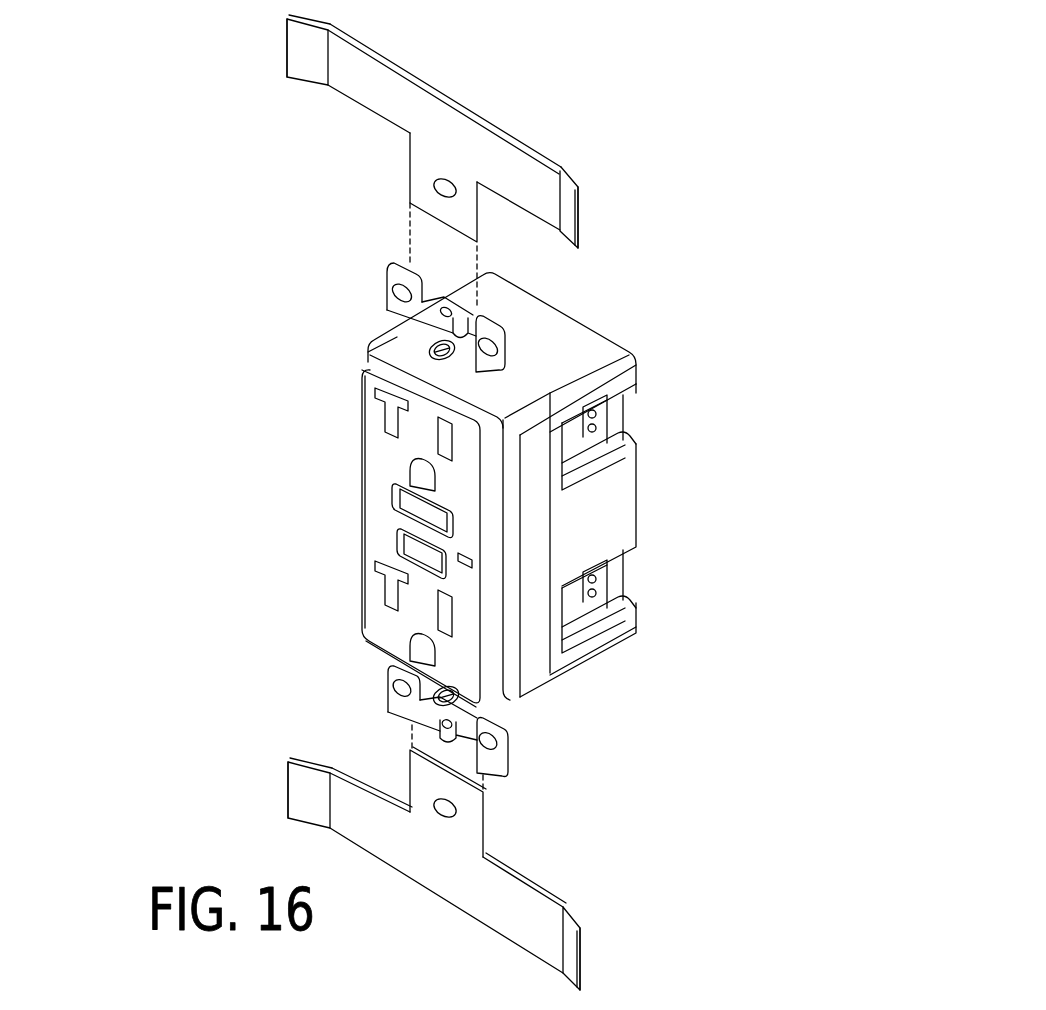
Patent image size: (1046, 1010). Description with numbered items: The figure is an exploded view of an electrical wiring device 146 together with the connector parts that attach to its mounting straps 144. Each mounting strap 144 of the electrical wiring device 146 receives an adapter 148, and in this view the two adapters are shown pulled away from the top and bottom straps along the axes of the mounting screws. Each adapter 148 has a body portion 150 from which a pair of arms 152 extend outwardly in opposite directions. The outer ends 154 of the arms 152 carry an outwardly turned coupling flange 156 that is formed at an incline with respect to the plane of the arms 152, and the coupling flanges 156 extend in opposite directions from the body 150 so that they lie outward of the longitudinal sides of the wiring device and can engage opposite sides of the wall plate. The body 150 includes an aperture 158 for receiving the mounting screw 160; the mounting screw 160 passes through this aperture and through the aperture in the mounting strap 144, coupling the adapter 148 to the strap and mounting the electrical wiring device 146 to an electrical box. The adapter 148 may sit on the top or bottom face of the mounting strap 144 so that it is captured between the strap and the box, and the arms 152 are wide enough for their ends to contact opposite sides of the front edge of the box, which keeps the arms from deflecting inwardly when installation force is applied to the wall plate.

The mounting strap 144 is at (510, 346).
The electrical wiring device 146 is at (646, 343).
The adapter 148 is at (435, 496).
The body portion 150 is at (396, 535).
The arms 152 is at (365, 88).
The outer ends of the arms 154 is at (435, 496).
The coupling flanges 156 is at (307, 57).
The aperture 158 is at (433, 183).
The mounting screw 160 is at (429, 352).